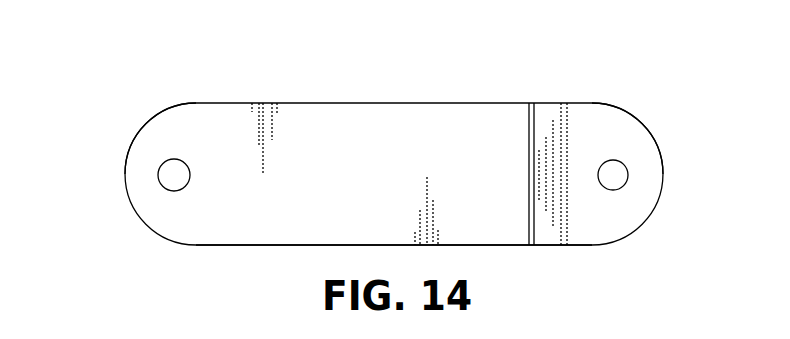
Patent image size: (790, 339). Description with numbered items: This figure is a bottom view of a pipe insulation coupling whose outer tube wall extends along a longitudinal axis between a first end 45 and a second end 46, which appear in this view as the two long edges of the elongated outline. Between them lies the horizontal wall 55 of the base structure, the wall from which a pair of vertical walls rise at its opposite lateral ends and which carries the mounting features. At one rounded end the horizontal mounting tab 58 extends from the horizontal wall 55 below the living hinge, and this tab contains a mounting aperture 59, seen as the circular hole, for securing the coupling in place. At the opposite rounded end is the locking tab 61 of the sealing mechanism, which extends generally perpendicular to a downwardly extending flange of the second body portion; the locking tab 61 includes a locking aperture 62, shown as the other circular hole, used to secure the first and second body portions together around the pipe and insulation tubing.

The first end 45 is at (405, 103).
The second end 46 is at (282, 245).
The horizontal wall 55 is at (490, 128).
The horizontal mounting tab 58 is at (194, 127).
The mounting aperture 59 is at (171, 175).
The locking tab 61 is at (618, 123).
The locking aperture 62 is at (613, 173).